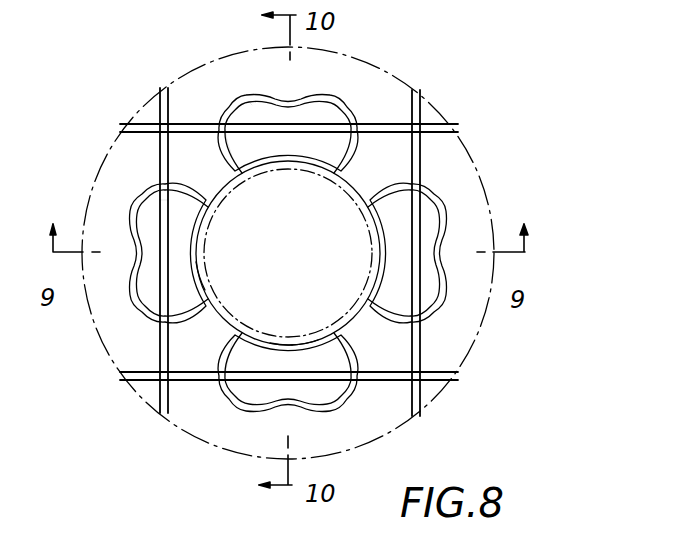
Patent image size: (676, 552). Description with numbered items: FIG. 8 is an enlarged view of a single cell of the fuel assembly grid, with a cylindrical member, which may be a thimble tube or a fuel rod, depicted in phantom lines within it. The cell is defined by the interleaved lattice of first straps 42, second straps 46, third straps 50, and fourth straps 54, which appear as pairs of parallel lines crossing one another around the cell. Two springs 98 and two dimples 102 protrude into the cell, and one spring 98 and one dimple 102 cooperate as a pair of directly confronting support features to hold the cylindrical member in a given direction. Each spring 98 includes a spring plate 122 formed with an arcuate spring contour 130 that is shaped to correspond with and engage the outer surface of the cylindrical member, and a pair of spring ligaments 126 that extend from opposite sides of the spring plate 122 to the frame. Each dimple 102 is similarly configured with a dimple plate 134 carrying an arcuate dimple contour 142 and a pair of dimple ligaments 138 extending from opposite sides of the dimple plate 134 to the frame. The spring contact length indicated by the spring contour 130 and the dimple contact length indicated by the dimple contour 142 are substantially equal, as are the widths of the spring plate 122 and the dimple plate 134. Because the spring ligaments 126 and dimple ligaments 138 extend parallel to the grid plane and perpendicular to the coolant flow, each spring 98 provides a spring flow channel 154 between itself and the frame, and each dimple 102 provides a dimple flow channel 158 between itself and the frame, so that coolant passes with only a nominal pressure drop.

The first straps 42 is at (158, 100).
The second straps 46 is at (424, 103).
The third straps 50 is at (142, 369).
The fourth straps 54 is at (142, 132).
The spring 98 is at (293, 165).
The dimple 102 is at (301, 93).
The spring plate 122 is at (200, 267).
The spring ligaments 126 is at (180, 192).
The spring contour 130 is at (215, 215).
The dimple plate 134 is at (284, 342).
The dimple ligaments 138 is at (232, 348).
The dimple contour 142 is at (304, 342).
The spring flow channel 154 is at (165, 202).
The dimple flow channel 158 is at (256, 108).